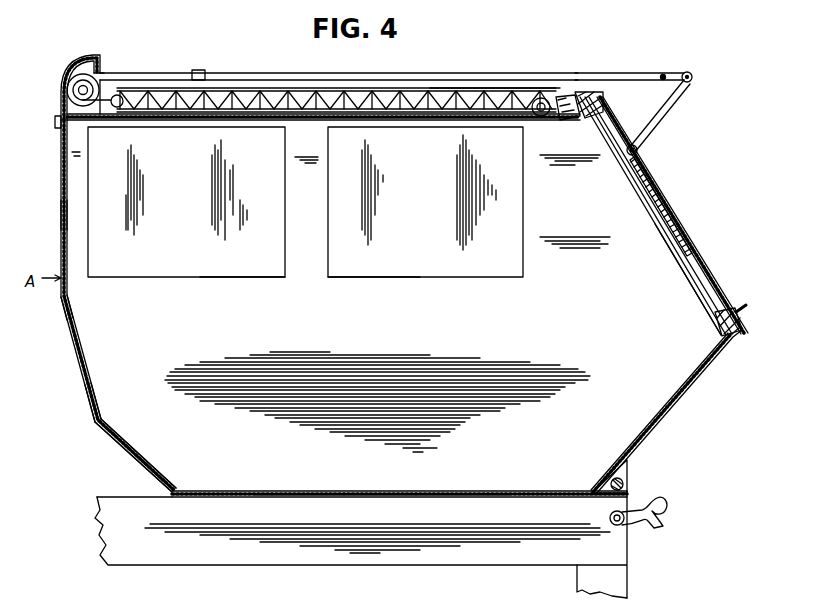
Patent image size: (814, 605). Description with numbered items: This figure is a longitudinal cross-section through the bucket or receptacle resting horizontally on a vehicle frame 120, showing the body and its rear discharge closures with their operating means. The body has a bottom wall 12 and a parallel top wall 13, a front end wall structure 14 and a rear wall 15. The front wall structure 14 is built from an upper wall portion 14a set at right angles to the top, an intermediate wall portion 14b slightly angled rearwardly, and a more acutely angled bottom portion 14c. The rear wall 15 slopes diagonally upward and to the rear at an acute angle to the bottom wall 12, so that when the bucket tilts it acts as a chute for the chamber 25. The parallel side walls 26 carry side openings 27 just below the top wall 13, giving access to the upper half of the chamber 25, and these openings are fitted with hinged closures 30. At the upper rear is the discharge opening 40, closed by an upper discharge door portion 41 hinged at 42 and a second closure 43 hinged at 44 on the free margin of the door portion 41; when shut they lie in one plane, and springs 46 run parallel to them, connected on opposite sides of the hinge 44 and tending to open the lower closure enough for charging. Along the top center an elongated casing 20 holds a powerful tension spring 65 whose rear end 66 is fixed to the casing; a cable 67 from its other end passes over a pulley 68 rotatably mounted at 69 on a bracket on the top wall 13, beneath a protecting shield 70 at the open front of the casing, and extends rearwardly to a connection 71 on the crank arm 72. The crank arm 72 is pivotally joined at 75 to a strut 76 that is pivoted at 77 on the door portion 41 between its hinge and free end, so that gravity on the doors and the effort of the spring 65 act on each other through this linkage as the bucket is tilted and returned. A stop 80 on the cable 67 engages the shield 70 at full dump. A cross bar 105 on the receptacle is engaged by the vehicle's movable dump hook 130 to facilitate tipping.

The bottom wall 12 is at (340, 467).
The top wall 13 is at (306, 121).
The front end wall structure 14 is at (73, 379).
The upper wall portion 14a is at (62, 216).
The intermediate wall portion 14b is at (96, 396).
The bottom wall portion 14c is at (143, 465).
The rear wall 15 is at (667, 402).
The elongated casing 20 is at (418, 92).
The chamber 25 is at (85, 318).
The side walls 26 is at (377, 389).
The side openings 27 is at (248, 274).
The closures 30 is at (272, 258).
The discharge opening 40 is at (716, 318).
The upper discharge door portion 41 is at (631, 168).
The hinge 42 is at (594, 97).
The second closure 43 is at (703, 277).
The hinge 44 is at (669, 206).
The springs 46 is at (684, 225).
The spring 65 is at (460, 92).
The rear end 66 is at (547, 106).
The cable 67 is at (119, 93).
The pulley 68 is at (97, 73).
The pulley mounting 69 is at (80, 91).
The protecting shield 70 is at (72, 67).
The cable connection 71 is at (665, 76).
The crank arm 72 is at (628, 73).
The pivotal connection 75 is at (693, 80).
The strut 76 is at (667, 111).
The pivot 77 is at (641, 150).
The stop 80 is at (198, 70).
The cross bar 105 is at (624, 483).
The frame 120 is at (427, 553).
The dump hook 130 is at (661, 524).